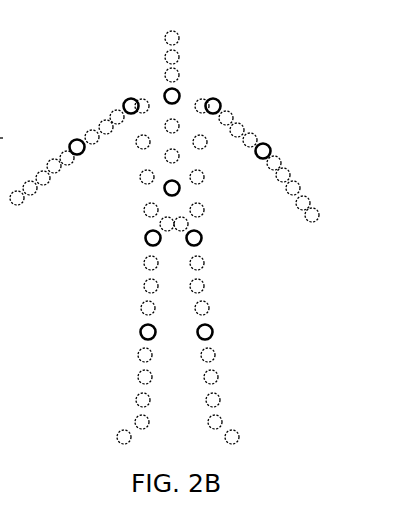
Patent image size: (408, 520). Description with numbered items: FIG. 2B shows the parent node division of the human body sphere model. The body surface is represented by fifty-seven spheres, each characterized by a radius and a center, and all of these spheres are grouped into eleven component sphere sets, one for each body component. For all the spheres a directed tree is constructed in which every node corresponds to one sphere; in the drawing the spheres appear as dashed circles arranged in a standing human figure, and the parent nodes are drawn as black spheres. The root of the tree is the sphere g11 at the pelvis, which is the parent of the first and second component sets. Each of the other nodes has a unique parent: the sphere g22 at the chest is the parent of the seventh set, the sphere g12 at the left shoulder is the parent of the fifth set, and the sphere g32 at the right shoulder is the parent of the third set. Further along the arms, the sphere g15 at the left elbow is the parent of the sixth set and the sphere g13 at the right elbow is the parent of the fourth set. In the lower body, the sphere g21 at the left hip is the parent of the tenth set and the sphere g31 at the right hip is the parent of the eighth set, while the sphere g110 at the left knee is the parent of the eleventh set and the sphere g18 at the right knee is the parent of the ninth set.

The sphere g_1^2 g12 is at (128, 90).
The sphere g_2^2 g22 is at (181, 87).
The sphere g_3^2 g32 is at (220, 92).
The sphere g_1^5 g15 is at (67, 132).
The sphere g_1^3 g13 is at (270, 136).
The sphere g_1^1 g11 is at (178, 179).
The sphere g_2^1 g21 is at (143, 233).
The sphere g_3^1 g31 is at (202, 233).
The sphere g_1^10 g110 is at (136, 331).
The sphere g_1^8 g18 is at (214, 331).